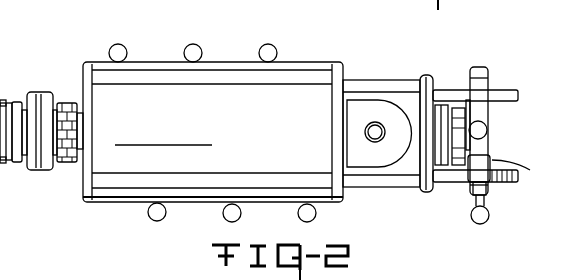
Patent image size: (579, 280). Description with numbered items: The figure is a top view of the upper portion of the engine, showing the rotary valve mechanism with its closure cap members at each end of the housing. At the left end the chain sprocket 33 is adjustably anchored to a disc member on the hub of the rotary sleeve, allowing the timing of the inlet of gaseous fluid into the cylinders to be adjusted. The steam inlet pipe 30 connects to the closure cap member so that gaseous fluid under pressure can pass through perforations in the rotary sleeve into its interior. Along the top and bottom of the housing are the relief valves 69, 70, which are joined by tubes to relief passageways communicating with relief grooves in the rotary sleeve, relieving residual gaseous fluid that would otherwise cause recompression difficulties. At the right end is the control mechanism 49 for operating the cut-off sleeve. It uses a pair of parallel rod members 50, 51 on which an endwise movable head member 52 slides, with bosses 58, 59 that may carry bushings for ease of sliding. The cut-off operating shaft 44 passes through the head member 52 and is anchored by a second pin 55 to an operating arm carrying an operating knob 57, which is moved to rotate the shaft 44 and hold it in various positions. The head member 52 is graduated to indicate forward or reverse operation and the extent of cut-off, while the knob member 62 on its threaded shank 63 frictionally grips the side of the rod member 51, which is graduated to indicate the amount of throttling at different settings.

The steam inlet pipe 30 is at (376, 121).
The chain sprocket 33 is at (78, 100).
The cut-off operating shaft 44 is at (467, 130).
The control mechanism 49 is at (493, 160).
The rod member 50 is at (518, 95).
The rod member 51 is at (500, 181).
The head member 52 is at (490, 158).
The second pin 55 is at (465, 180).
The operating knob 57 is at (488, 130).
The boss 58 is at (490, 80).
The boss 59 is at (489, 185).
The knob member 62 is at (489, 215).
The threaded shank 63 is at (473, 210).
The relief valve 69 is at (120, 44).
The relief valve 70 is at (150, 218).